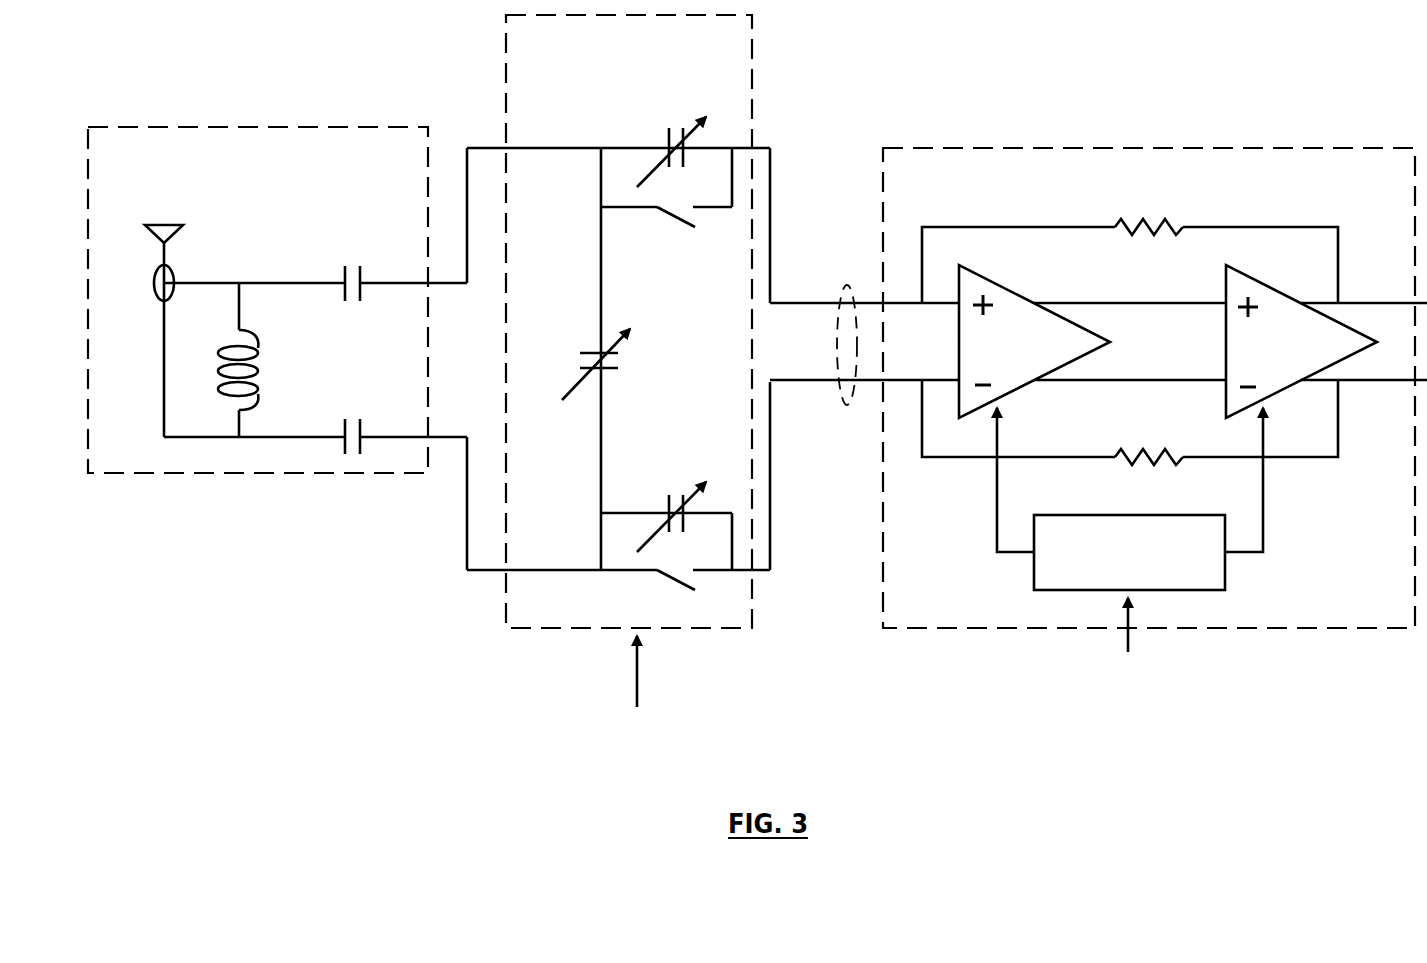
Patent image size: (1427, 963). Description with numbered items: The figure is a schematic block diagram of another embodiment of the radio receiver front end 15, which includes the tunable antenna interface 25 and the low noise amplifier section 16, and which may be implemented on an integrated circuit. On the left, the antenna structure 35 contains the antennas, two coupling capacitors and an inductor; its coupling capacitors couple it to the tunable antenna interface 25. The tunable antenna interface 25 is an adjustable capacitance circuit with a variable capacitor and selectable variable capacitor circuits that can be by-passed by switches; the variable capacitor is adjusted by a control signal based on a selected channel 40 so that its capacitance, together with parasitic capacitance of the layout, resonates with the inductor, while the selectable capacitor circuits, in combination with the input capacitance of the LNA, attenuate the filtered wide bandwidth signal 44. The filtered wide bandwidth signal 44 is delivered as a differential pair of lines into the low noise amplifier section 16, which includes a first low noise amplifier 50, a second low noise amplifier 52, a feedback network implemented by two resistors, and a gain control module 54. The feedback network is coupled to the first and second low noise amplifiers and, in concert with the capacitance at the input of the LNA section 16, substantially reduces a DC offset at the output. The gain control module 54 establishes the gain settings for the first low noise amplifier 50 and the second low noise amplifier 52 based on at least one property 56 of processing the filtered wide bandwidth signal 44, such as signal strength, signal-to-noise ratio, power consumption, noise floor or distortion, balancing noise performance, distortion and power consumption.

The radio receiver front end 15 is at (757, 444).
The antenna structure 35 is at (277, 300).
The tunable antenna interface 25 is at (618, 321).
The selected channel 40 is at (636, 704).
The filtered wide bandwidth signal 44 is at (951, 234).
The low noise amplifier section 16 is at (1155, 415).
The first low noise amplifier 50 is at (1034, 341).
The second low noise amplifier 52 is at (1301, 341).
The gain control module 54 is at (1128, 499).
The property 56 is at (1129, 640).